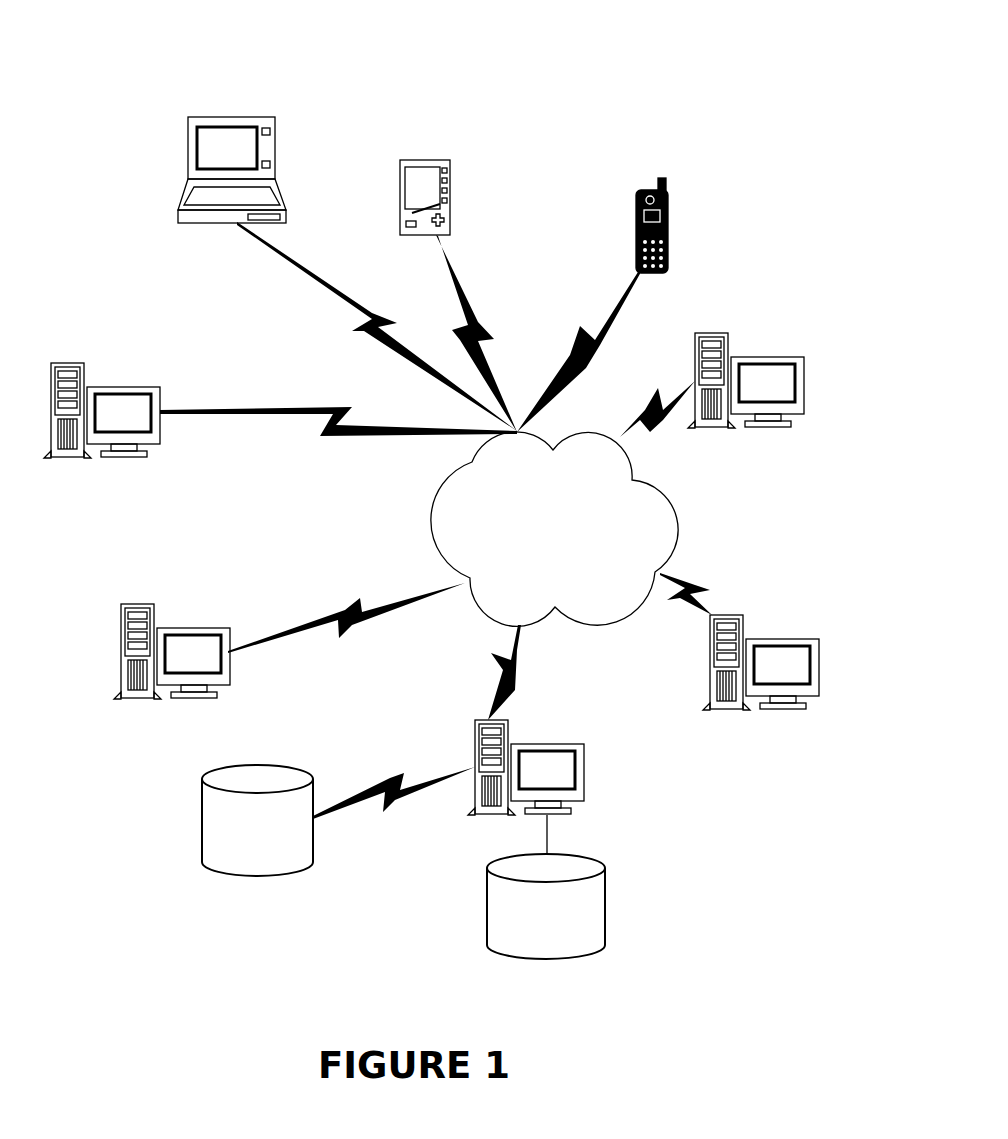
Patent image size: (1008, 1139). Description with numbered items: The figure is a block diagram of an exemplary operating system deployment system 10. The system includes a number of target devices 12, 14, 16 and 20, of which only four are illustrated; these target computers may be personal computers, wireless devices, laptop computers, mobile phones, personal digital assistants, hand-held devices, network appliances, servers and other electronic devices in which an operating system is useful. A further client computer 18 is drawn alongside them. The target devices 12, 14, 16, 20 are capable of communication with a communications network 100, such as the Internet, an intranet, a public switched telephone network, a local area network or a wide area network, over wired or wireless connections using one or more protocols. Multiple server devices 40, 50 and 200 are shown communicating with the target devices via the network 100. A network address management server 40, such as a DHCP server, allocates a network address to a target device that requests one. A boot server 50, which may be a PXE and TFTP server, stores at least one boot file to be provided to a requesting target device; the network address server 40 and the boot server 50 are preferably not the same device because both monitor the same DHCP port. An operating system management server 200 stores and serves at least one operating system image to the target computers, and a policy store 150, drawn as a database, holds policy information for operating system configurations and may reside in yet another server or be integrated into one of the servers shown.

The operating system deployment system 10 is at (626, 60).
The target device 12 is at (233, 117).
The target device 14 is at (450, 162).
The target device 16 is at (645, 190).
The client computer 18 is at (122, 388).
The target device 20 is at (192, 628).
The network address management server 40 is at (767, 356).
The boot server 50 is at (782, 640).
The communications network 100 is at (590, 623).
The policy store 150 is at (202, 822).
The operating system management server 200 is at (547, 743).